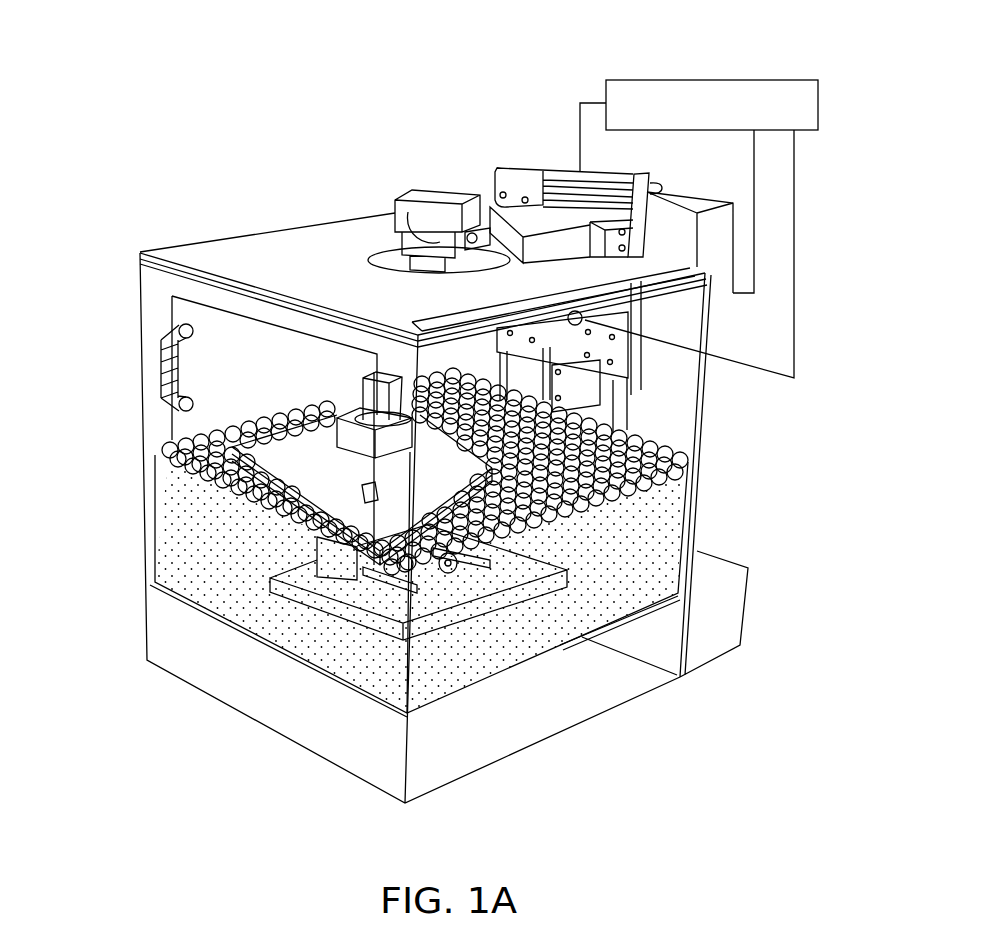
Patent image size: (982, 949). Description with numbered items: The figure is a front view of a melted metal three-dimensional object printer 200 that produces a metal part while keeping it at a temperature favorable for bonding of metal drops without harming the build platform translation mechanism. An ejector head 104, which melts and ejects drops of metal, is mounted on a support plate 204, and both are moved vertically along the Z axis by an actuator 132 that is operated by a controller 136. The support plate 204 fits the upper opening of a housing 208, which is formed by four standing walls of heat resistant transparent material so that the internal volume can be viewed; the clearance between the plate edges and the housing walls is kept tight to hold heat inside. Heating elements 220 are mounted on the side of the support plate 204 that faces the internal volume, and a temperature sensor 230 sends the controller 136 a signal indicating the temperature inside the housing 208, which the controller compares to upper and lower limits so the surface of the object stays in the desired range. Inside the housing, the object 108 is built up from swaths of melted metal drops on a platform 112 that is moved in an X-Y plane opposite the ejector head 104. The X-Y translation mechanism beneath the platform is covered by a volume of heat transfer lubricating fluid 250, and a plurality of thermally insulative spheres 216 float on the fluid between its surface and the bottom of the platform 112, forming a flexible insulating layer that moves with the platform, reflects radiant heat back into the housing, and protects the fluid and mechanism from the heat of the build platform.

The printer 200 is at (110, 163).
The ejector head 104 is at (431, 200).
The actuator 132 is at (571, 172).
The controller 136 is at (736, 80).
The heating elements 220 is at (328, 283).
The support plate 204 is at (650, 290).
The temperature sensor 230 is at (615, 348).
The thermally insulative spheres 216 is at (672, 472).
The object 108 is at (366, 390).
The platform 112 is at (270, 420).
The housing 208 is at (225, 497).
The heat transfer lubricating fluid 250 is at (500, 589).